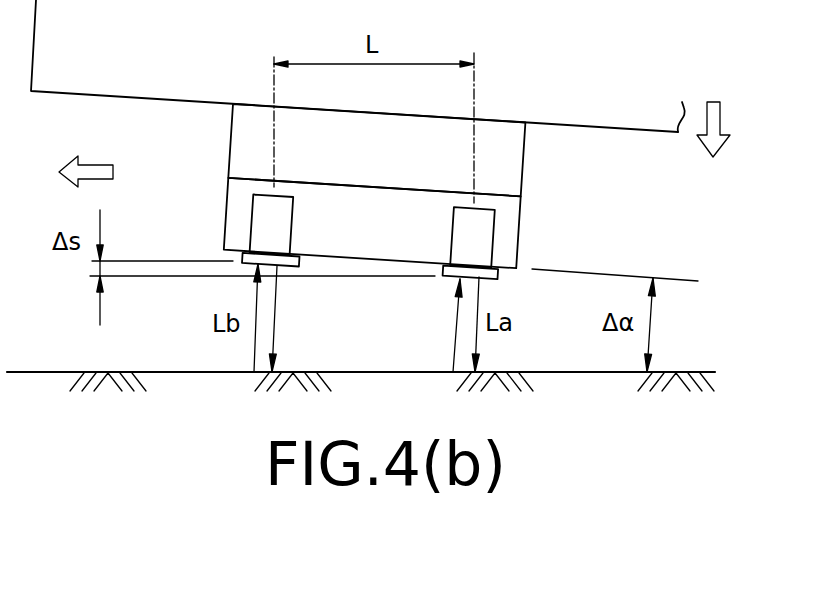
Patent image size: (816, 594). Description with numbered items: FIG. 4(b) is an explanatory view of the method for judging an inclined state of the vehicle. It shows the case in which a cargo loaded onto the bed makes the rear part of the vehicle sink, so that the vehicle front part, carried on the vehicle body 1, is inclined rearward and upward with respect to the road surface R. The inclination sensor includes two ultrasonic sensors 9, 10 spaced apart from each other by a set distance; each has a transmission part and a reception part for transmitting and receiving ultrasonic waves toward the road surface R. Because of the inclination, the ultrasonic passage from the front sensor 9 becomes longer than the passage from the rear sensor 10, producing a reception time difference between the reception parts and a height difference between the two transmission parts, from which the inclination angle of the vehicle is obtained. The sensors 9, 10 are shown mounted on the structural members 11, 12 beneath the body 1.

The vehicle body 1 is at (638, 115).
The ultrasonic sensor 9 is at (268, 203).
The ultrasonic sensor 10 is at (482, 212).
The lower frame member 11 is at (510, 223).
The upper frame member 12 is at (510, 162).
The road surface R is at (557, 372).